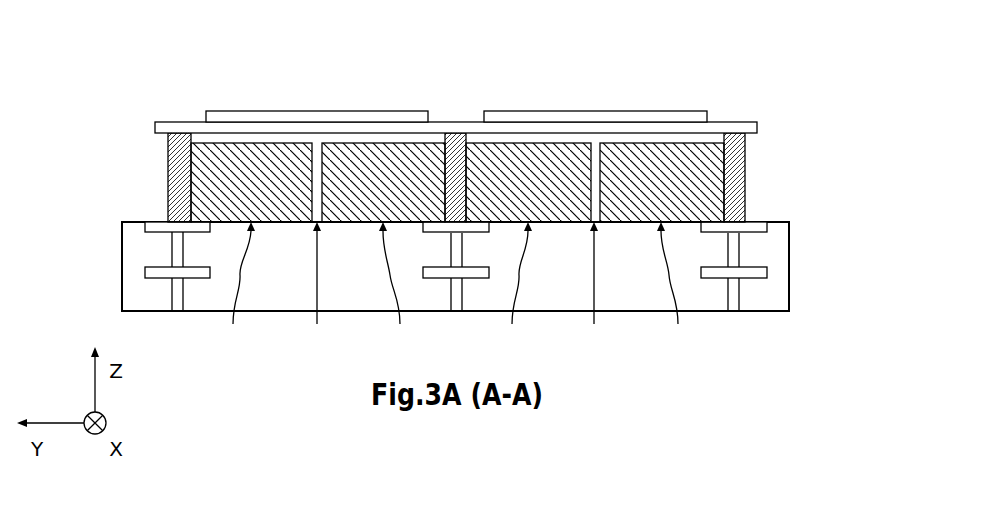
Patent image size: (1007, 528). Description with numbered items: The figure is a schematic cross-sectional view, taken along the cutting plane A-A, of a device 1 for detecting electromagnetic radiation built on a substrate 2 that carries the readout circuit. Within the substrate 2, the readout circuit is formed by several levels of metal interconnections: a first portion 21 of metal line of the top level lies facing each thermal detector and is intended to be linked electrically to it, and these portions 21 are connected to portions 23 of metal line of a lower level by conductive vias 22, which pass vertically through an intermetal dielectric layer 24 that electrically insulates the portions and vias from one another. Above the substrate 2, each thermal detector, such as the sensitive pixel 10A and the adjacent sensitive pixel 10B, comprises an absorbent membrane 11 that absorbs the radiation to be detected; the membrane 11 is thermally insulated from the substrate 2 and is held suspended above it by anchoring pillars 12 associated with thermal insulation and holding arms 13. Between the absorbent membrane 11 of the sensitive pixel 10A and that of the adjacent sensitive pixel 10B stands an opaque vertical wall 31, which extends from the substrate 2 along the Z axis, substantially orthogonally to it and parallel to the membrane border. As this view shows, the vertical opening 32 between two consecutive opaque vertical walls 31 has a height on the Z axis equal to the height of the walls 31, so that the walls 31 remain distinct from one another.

The detection device 1 is at (124, 32).
The substrate 2 is at (798, 267).
The sensitive pixel 10A is at (253, 62).
The adjacent sensitive pixel 10B is at (538, 57).
The absorbent membrane 11 is at (321, 103).
The anchoring pillar 12 is at (159, 180).
The thermal insulation and holding arm 13 is at (146, 127).
The first portion of metal line 21 is at (150, 230).
The conductive via 22 is at (168, 250).
The portion of metal line of lower level 23 is at (145, 272).
The intermetal dielectric layer 24 is at (778, 250).
The opaque vertical wall 31 is at (455, 292).
The vertical opening 32 is at (455, 292).